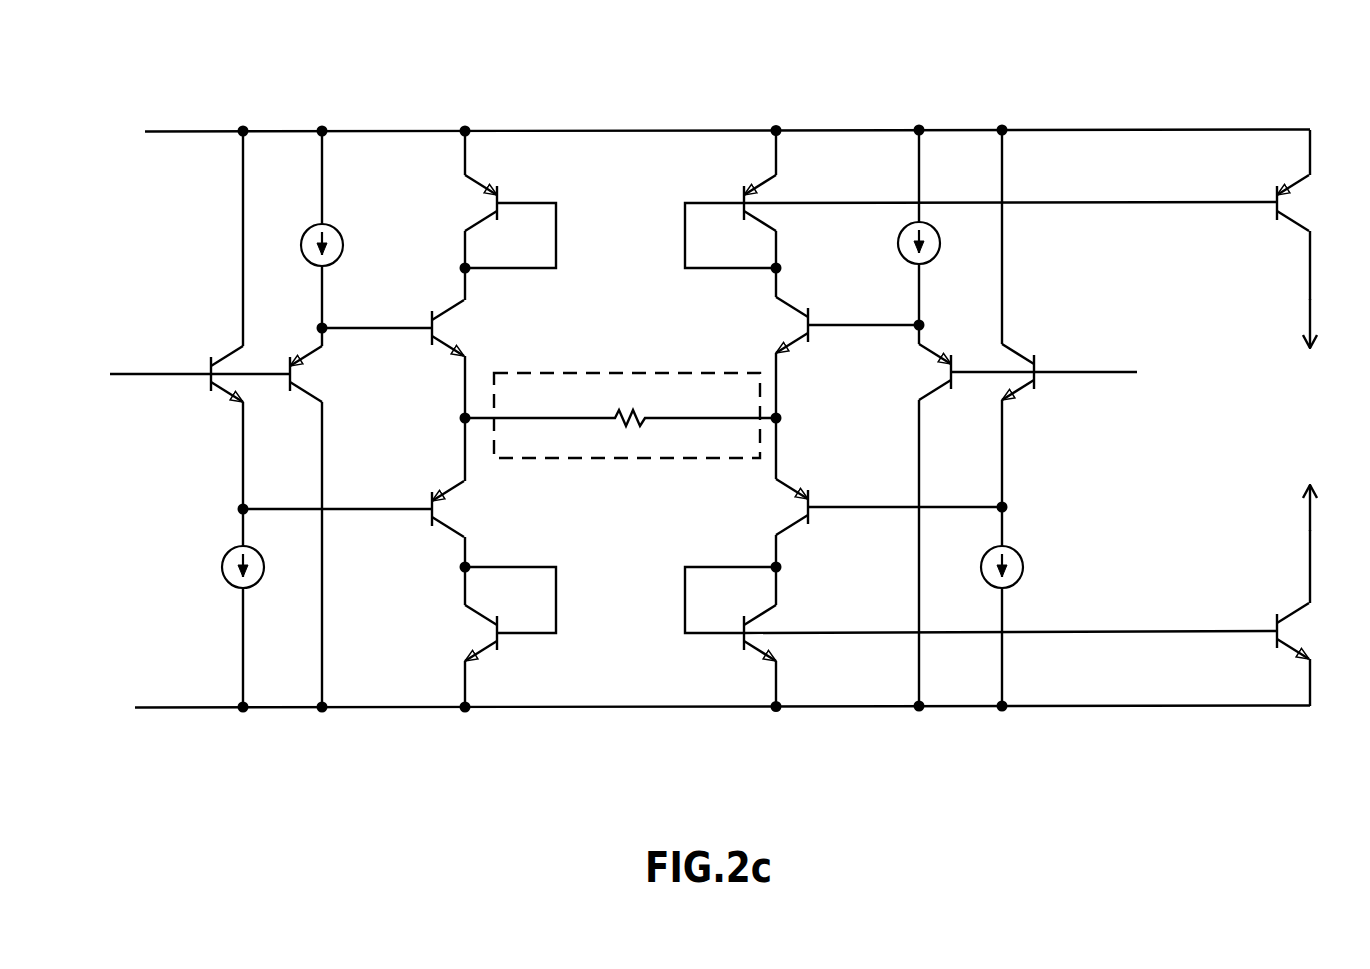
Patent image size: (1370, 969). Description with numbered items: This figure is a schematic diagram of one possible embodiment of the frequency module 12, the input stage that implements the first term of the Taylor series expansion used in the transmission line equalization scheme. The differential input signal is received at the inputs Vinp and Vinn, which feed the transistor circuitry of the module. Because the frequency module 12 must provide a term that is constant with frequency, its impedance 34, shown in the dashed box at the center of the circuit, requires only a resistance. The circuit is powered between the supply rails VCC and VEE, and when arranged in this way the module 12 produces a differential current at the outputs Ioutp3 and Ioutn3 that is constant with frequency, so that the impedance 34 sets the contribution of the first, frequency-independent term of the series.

The frequency module 12 is at (737, 96).
The impedance 34 is at (632, 373).
The positive supply rail VCC is at (694, 131).
The negative supply rail VEE is at (689, 707).
The input Vinp is at (167, 381).
The input Vinn is at (1077, 378).
The differential current output Ioutp3 is at (1326, 340).
The differential current output Ioutn3 is at (1326, 485).